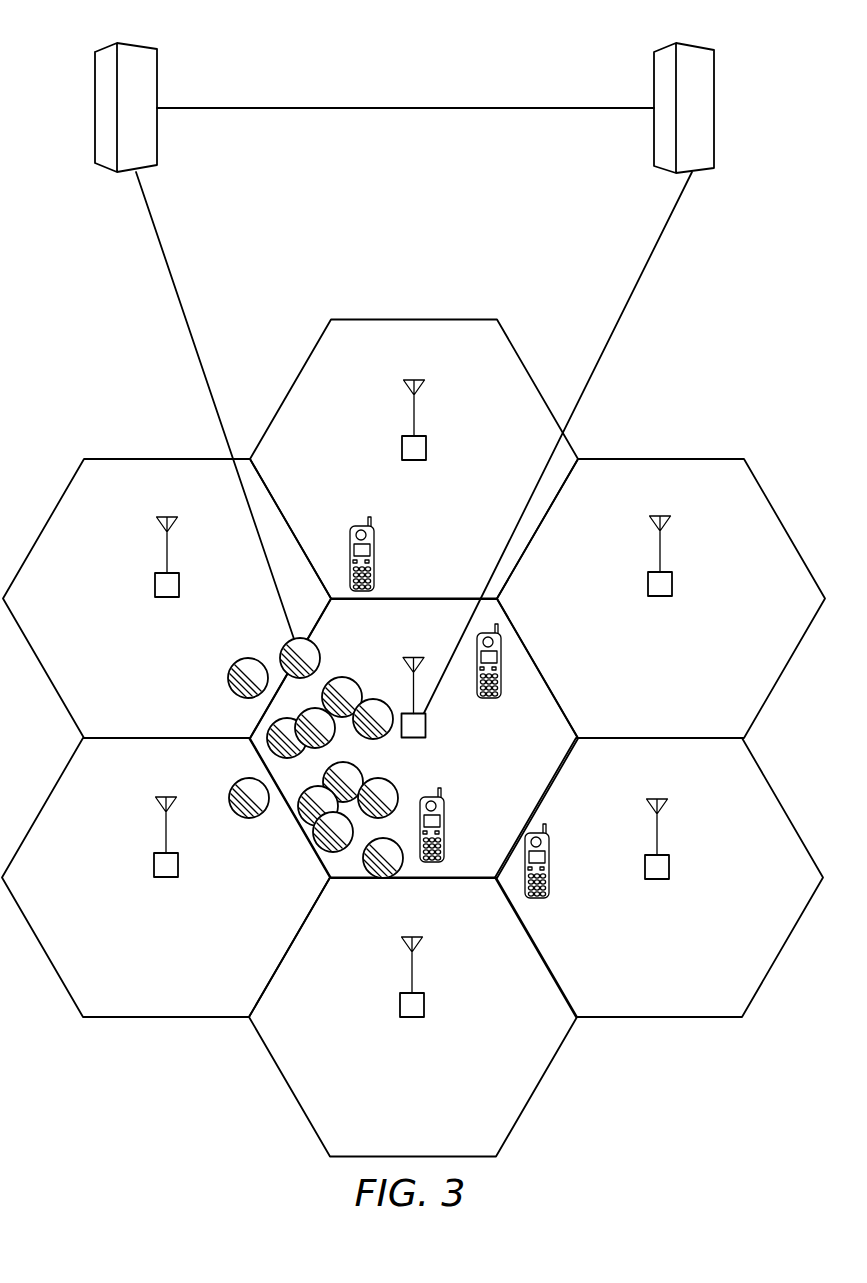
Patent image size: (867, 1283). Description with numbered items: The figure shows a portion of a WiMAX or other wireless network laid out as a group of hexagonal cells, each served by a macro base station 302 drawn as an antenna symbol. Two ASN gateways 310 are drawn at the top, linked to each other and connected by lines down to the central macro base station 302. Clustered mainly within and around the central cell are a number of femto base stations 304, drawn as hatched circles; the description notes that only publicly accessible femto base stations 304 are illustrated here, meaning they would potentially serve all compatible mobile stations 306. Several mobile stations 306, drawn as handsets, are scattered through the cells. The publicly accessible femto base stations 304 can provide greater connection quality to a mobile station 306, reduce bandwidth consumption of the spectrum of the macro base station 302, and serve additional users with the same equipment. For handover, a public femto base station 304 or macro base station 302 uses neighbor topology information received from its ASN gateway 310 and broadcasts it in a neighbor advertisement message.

The ASN gateway 310 is at (97, 98).
The macro base station 302 is at (425, 726).
The femto base station 304 is at (229, 678).
The mobile station 306 is at (376, 558).